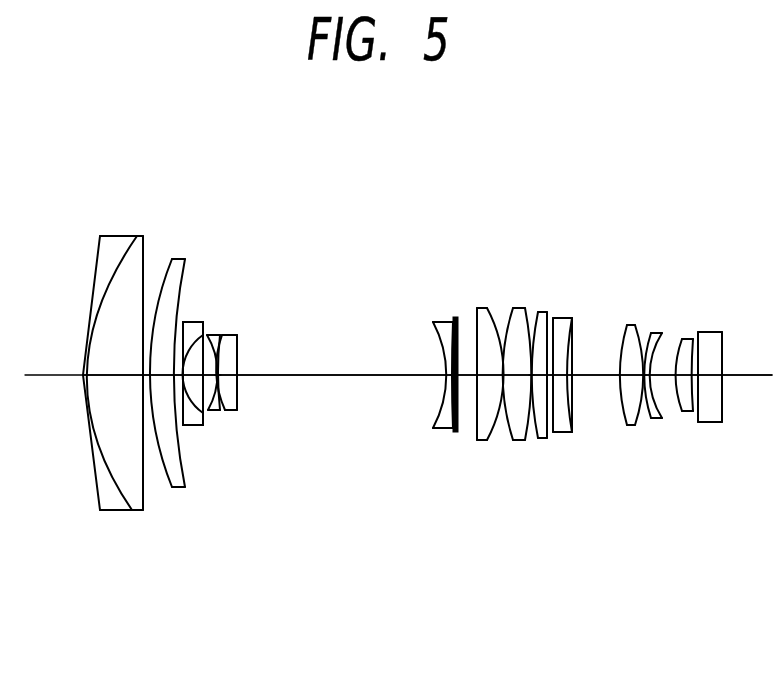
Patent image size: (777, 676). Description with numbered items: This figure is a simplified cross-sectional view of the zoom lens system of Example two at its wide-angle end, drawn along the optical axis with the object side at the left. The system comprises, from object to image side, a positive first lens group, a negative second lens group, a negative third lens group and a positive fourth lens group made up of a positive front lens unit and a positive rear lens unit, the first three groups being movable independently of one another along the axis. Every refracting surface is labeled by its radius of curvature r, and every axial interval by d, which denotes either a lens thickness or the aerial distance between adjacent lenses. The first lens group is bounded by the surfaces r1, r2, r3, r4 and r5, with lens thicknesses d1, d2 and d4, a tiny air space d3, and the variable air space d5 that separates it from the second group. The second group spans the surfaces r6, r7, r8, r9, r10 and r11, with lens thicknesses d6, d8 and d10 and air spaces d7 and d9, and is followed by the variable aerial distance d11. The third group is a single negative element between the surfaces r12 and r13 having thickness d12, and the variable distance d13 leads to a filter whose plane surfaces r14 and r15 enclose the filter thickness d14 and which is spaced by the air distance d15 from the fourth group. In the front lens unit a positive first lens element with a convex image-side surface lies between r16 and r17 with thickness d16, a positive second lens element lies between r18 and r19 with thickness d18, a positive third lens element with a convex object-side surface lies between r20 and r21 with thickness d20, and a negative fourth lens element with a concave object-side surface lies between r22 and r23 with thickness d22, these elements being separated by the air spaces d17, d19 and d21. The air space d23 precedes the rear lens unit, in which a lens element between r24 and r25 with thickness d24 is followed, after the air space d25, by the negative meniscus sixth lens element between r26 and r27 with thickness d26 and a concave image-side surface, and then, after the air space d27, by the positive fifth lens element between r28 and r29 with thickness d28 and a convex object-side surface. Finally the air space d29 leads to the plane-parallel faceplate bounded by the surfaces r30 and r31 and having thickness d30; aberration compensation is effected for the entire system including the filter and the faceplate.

The radius of curvature of first lens surface r1 is at (98, 235).
The radius of curvature of second lens surface r2 is at (136, 236).
The radius of curvature of third lens surface r3 is at (145, 237).
The radius of curvature of fourth lens surface r4 is at (180, 260).
The radius of curvature of fifth lens surface r5 is at (185, 260).
The radius of curvature of sixth lens surface r6 is at (185, 322).
The radius of curvature of seventh lens surface r7 is at (205, 322).
The radius of curvature of eighth lens surface r8 is at (209, 335).
The radius of curvature of ninth lens surface r9 is at (220, 335).
The radius of curvature of tenth lens surface r10 is at (227, 335).
The radius of curvature of eleventh lens surface r11 is at (237, 335).
The radius of curvature of twelfth lens surface r12 is at (433, 322).
The radius of curvature of thirteenth lens surface r13 is at (451, 322).
The radius of curvature of fourteenth surface r14 is at (455, 317).
The radius of curvature of fifteenth surface r15 is at (478, 308).
The radius of curvature of sixteenth lens surface r16 is at (486, 308).
The radius of curvature of seventeenth lens surface r17 is at (514, 308).
The radius of curvature of eighteenth lens surface r18 is at (524, 308).
The radius of curvature of nineteenth lens surface r19 is at (539, 312).
The radius of curvature of twentieth lens surface r20 is at (547, 312).
The radius of curvature of twenty-first lens surface r21 is at (554, 318).
The radius of curvature of twenty-second lens surface r22 is at (567, 318).
The radius of curvature of twenty-third lens surface r23 is at (572, 318).
The radius of curvature of twenty-fourth lens surface r24 is at (627, 325).
The radius of curvature of twenty-fifth lens surface r25 is at (635, 325).
The radius of curvature of twenty-sixth lens surface r26 is at (651, 333).
The radius of curvature of twenty-seventh lens surface r27 is at (662, 333).
The radius of curvature of twenty-eighth lens surface r28 is at (682, 339).
The radius of curvature of twenty-ninth lens surface r29 is at (693, 339).
The radius of curvature of thirtieth surface r30 is at (698, 332).
The radius of curvature of thirty-first surface r31 is at (722, 332).
The first lens thickness d1 is at (90, 420).
The second lens thickness d2 is at (138, 430).
The third aerial distance d3 is at (152, 455).
The fourth lens thickness d4 is at (170, 440).
The fifth aerial distance d5 is at (182, 436).
The sixth lens thickness d6 is at (194, 438).
The seventh aerial distance d7 is at (208, 430).
The eighth lens thickness d8 is at (214, 420).
The ninth aerial distance d9 is at (219, 418).
The tenth lens thickness d10 is at (230, 418).
The eleventh aerial distance d11 is at (295, 290).
The twelfth lens thickness d12 is at (440, 393).
The thirteenth aerial distance d13 is at (448, 429).
The filter thickness d14 is at (455, 433).
The fifteenth aerial distance d15 is at (467, 441).
The sixteenth lens thickness d16 is at (483, 441).
The seventeenth aerial distance d17 is at (513, 441).
The eighteenth lens thickness d18 is at (531, 439).
The nineteenth aerial distance d19 is at (543, 438).
The twentieth lens thickness d20 is at (551, 433).
The twenty-first aerial distance d21 is at (562, 434).
The twenty-second lens thickness d22 is at (605, 435).
The twenty-third aerial distance d23 is at (629, 427).
The twenty-fourth lens thickness d24 is at (645, 427).
The twenty-fifth aerial distance d25 is at (656, 419).
The twenty-sixth lens thickness d26 is at (669, 420).
The twenty-seventh aerial distance d27 is at (686, 414).
The twenty-eighth lens thickness d28 is at (695, 425).
The twenty-ninth aerial distance d29 is at (710, 424).
The faceplate thickness d30 is at (730, 425).